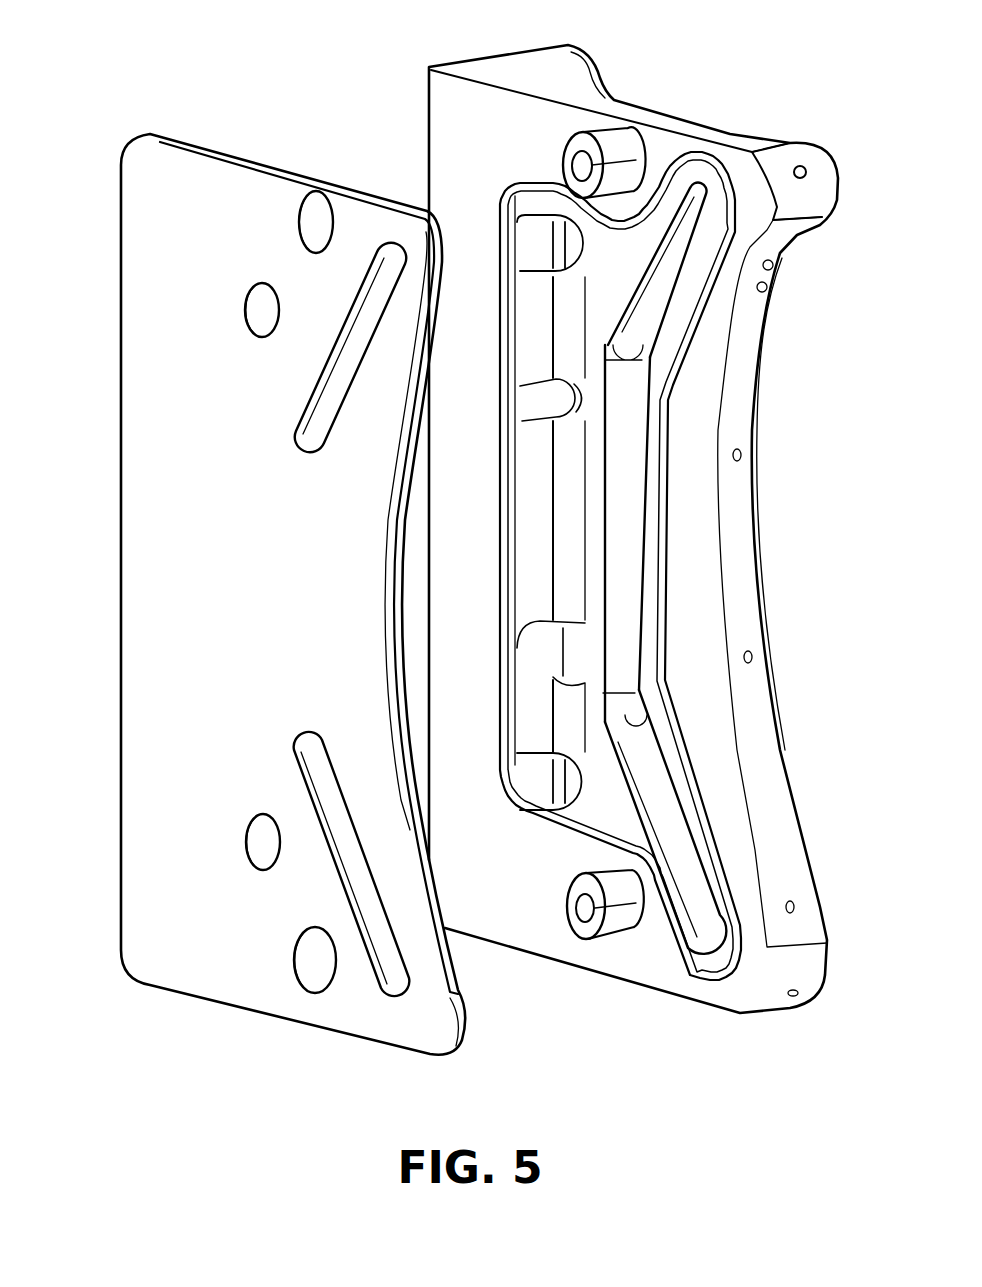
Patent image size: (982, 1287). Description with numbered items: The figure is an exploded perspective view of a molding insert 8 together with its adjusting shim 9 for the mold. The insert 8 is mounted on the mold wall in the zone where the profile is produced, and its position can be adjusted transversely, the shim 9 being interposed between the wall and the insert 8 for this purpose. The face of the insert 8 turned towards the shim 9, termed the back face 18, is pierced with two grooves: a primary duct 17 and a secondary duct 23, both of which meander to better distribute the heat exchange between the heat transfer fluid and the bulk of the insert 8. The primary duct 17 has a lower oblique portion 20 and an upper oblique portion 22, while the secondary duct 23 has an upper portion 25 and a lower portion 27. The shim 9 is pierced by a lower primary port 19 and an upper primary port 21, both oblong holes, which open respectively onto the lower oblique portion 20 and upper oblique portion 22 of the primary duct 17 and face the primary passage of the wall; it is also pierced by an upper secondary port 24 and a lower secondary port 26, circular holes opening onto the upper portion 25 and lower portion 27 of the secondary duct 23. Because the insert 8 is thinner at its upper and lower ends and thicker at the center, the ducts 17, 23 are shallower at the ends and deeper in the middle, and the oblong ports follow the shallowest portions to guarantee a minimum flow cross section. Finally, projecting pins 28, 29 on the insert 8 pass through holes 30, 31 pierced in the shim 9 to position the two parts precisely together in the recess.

The molding insert 8 is at (803, 236).
The adjusting shim 9 is at (128, 412).
The primary duct 17 is at (630, 628).
The back face 18 is at (447, 168).
The lower primary port 19 is at (383, 942).
The lower oblique portion of the primary duct 20 is at (678, 902).
The upper primary port 21 is at (303, 443).
The upper oblique portion of the primary duct 22 is at (675, 280).
The secondary duct 23 is at (536, 513).
The upper secondary port 24 is at (267, 313).
The upper portion of the secondary duct 25 is at (565, 242).
The lower secondary port 26 is at (270, 840).
The lower portion of the secondary duct 27 is at (549, 778).
The projecting pin 28 is at (624, 147).
The projecting pin 29 is at (584, 927).
The hole 30 is at (318, 225).
The hole 31 is at (320, 958).